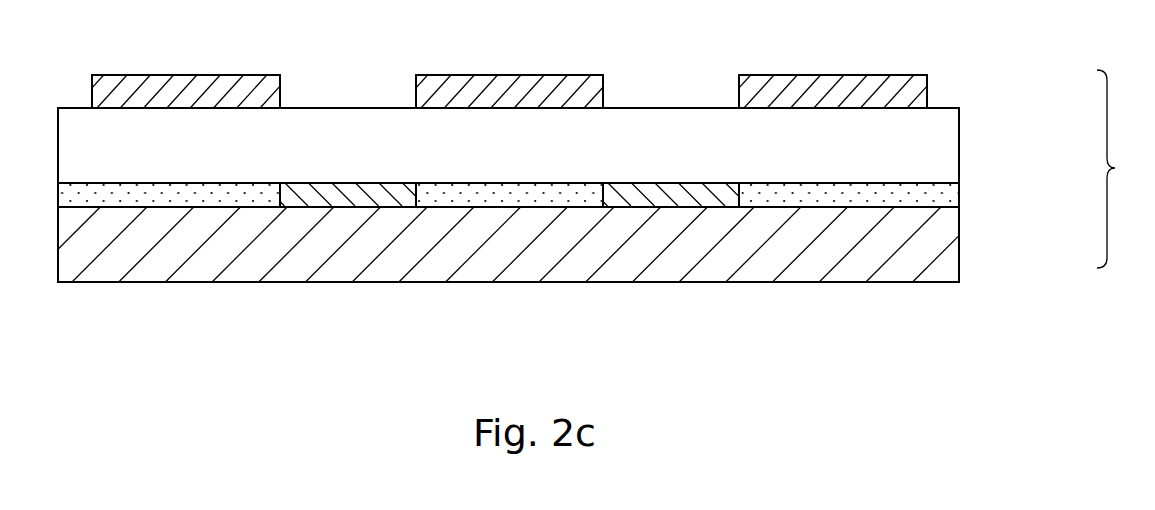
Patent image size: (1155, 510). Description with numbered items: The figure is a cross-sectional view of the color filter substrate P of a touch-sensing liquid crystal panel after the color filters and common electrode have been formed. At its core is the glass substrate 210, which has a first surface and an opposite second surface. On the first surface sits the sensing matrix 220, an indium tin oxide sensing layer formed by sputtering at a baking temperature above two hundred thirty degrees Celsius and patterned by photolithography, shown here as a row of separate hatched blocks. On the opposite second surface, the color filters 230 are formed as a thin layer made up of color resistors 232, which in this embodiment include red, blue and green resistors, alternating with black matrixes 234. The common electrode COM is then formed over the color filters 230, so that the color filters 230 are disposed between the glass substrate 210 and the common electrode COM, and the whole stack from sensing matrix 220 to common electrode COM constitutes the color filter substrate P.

The sensing matrix 220 is at (913, 90).
The glass substrate 210 is at (947, 147).
The color filters 230 is at (564, 264).
The color resistors 232 is at (833, 197).
The black matrixes 234 is at (682, 197).
The common electrode COM is at (947, 245).
The color filter substrate P is at (1117, 169).